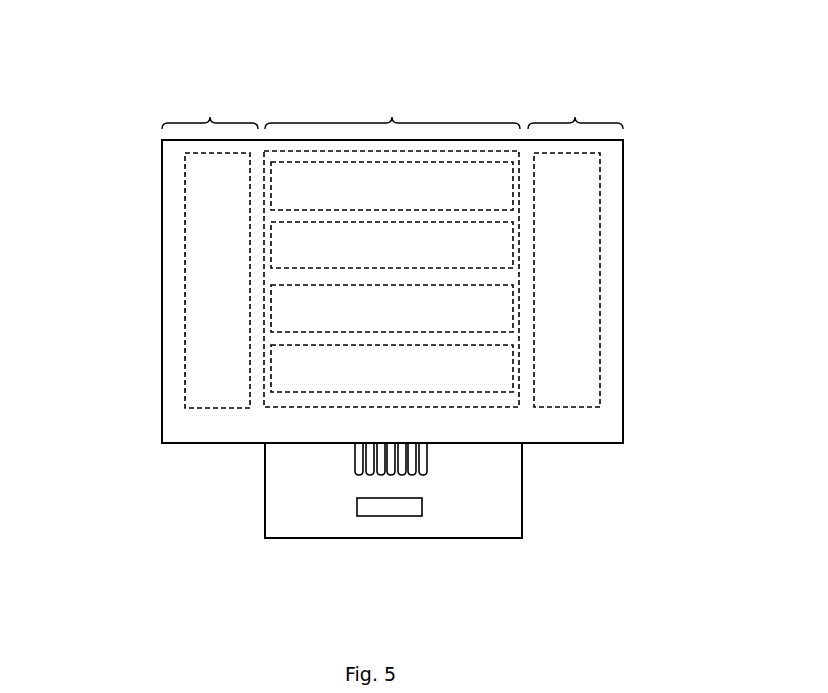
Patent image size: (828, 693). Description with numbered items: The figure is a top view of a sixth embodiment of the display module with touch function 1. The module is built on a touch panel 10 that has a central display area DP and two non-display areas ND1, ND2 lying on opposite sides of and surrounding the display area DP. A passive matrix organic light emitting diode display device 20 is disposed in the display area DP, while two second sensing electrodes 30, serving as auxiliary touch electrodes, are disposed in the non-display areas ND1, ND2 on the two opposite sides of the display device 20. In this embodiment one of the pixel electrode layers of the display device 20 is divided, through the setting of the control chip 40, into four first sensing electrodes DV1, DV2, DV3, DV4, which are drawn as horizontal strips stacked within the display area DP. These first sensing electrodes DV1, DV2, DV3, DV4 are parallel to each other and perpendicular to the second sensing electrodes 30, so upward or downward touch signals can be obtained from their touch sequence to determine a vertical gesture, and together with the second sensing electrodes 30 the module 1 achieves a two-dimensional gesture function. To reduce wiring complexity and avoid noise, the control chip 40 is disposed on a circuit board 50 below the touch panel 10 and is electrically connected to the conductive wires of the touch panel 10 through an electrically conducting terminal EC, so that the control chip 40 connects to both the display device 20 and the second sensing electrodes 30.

The display module with touch function 1 is at (113, 90).
The touch panel 10 is at (175, 182).
The passive matrix organic light emitting diode display device 20 is at (518, 197).
The second sensing electrode 30 is at (200, 213).
The control chip 40 is at (402, 508).
The circuit board 50 is at (473, 473).
The electrically conducting terminal EC is at (353, 458).
The first sensing electrode DV1 is at (307, 173).
The first sensing electrode DV2 is at (285, 242).
The first sensing electrode DV3 is at (292, 308).
The first sensing electrode DV4 is at (497, 370).
The non-display area ND1 is at (210, 108).
The non-display area ND2 is at (575, 108).
The display area DP is at (392, 108).